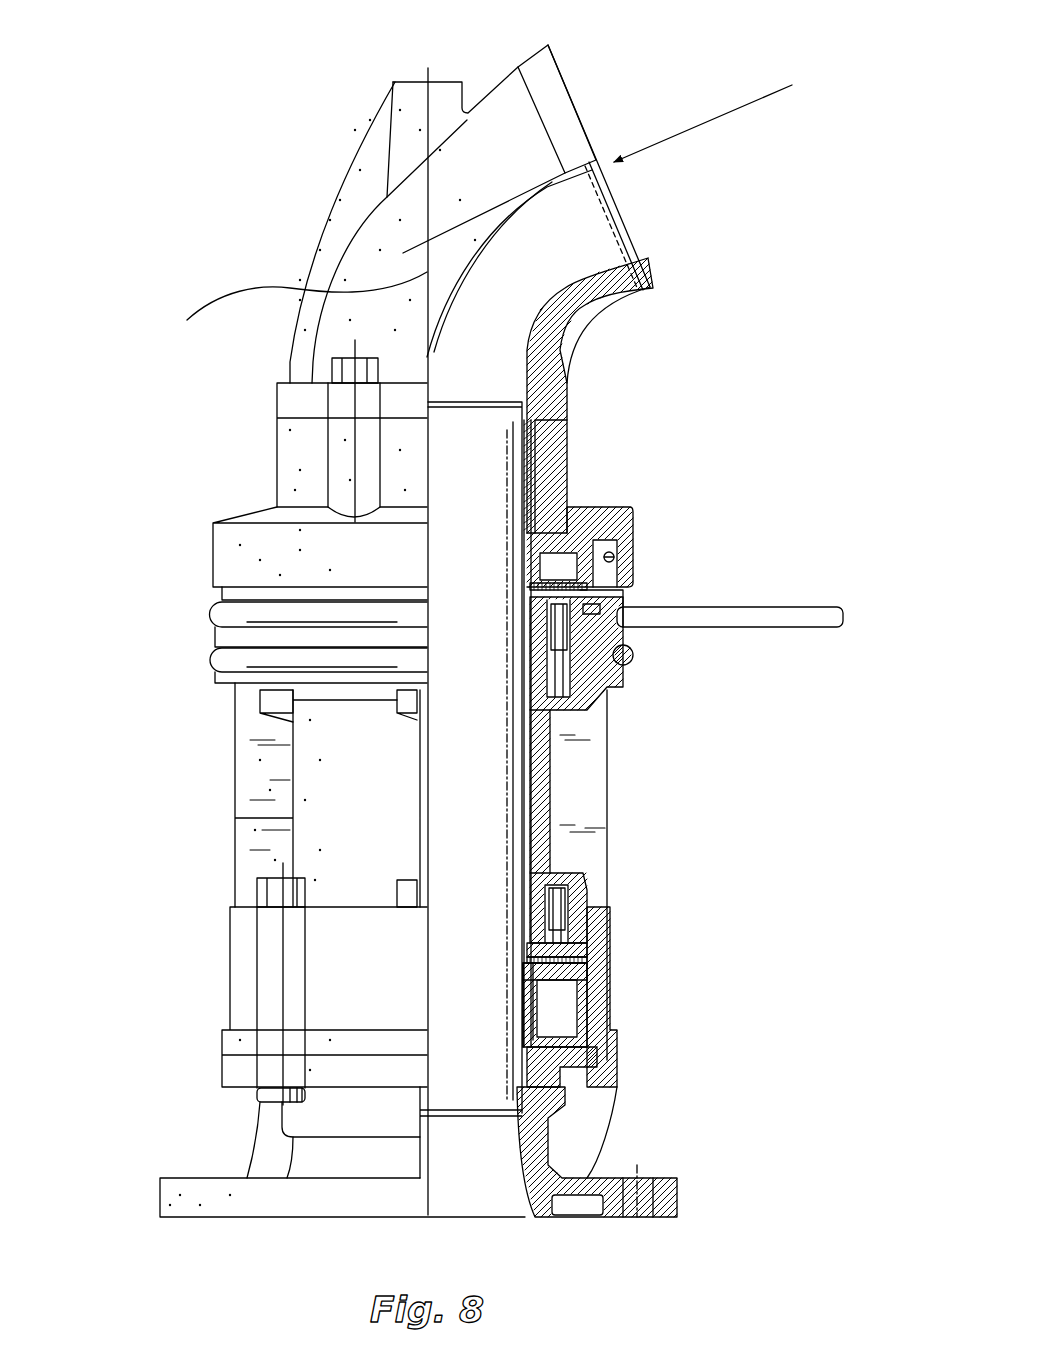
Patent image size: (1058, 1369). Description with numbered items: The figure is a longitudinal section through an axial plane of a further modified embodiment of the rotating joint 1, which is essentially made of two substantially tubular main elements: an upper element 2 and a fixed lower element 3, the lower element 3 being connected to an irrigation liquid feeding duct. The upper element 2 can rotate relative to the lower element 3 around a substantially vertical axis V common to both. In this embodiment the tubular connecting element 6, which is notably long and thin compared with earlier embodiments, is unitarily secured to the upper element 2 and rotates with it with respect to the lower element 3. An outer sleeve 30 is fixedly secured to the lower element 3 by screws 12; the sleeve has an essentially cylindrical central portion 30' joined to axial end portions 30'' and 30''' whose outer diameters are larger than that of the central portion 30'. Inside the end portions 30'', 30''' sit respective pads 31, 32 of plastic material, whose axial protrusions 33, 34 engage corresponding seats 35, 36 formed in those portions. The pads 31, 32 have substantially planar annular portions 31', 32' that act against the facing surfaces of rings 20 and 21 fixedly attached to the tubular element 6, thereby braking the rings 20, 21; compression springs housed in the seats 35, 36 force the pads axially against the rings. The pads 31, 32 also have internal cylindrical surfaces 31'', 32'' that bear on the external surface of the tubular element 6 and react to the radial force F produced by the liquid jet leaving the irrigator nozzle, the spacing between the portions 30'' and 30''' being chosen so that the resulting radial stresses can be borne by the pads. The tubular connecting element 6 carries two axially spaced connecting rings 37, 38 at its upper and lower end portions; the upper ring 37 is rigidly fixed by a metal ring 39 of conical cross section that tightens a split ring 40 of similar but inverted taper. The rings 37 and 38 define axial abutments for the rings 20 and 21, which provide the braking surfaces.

The rotating joint 1 is at (193, 186).
The upper element 2 is at (335, 226).
The lower element 3 is at (614, 1163).
The tubular connecting element 6 is at (502, 517).
The screws 12 is at (257, 897).
The ring 20 is at (617, 604).
The ring 21 is at (568, 963).
The outer sleeve 30 is at (321, 778).
The central portion 30' is at (273, 795).
The axial end portion 30'' is at (272, 617).
The axial end portion 30''' is at (272, 997).
The pad 31 is at (667, 642).
The planar annular portion 31' is at (518, 559).
The internal cylindrical surface 31'' is at (510, 646).
The pad 32 is at (603, 934).
The planar annular portion 32' is at (493, 1005).
The internal cylindrical surface 32'' is at (516, 953).
The axial protrusion 33 is at (622, 665).
The axial protrusion 34 is at (568, 905).
The seat 35 is at (608, 690).
The seat 36 is at (565, 890).
The upper connecting ring 37 is at (616, 556).
The lower connecting ring 38 is at (583, 1013).
The metal ring 39 is at (582, 509).
The split ring 40 is at (550, 418).
The vertical axis V is at (304, 311).
The radial force F is at (737, 110).